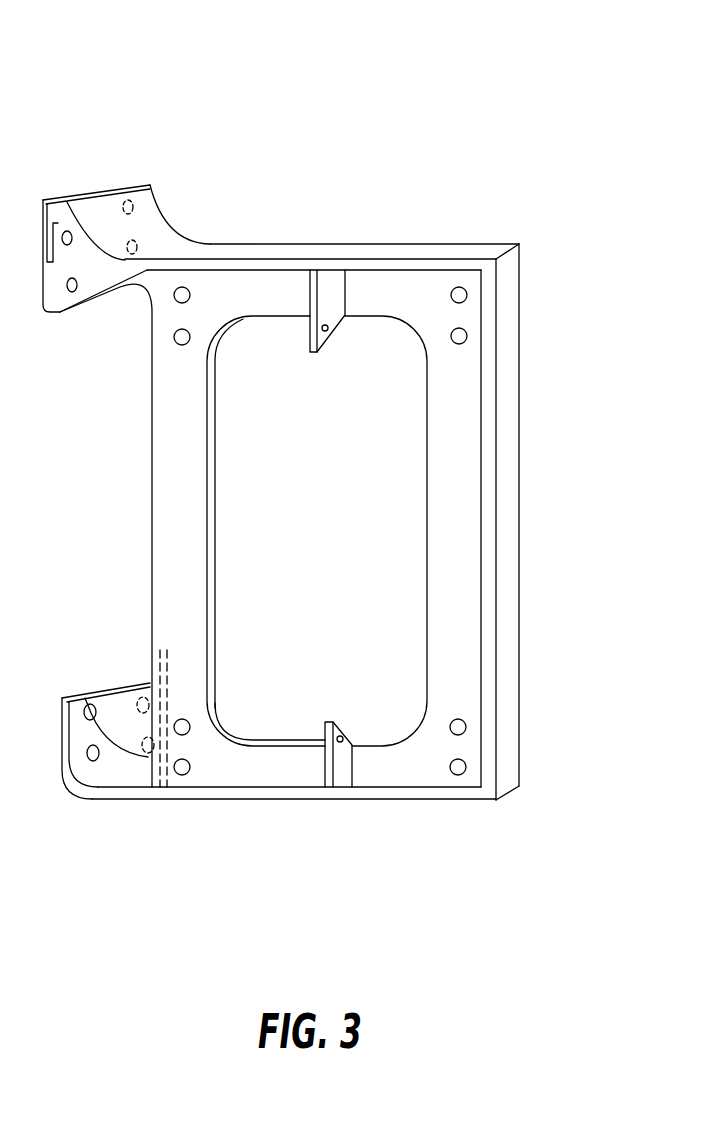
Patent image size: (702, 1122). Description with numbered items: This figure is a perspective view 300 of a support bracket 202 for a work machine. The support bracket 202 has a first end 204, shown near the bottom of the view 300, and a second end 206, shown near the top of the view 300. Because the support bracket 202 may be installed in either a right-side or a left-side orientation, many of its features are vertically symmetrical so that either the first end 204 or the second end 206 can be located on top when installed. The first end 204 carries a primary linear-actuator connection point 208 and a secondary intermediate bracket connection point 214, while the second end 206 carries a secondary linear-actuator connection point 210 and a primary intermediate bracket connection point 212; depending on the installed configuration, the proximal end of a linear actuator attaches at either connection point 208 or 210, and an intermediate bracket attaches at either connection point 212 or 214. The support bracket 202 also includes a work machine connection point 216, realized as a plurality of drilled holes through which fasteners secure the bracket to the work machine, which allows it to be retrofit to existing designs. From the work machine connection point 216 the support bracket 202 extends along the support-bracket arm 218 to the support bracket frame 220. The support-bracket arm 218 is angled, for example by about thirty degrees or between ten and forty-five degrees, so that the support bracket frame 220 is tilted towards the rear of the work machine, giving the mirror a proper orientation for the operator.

The view 300 is at (367, 95).
The support bracket 202 is at (152, 472).
The first end 204 is at (542, 731).
The second end 206 is at (540, 298).
The support bracket frame 220 is at (487, 255).
The primary linear-actuator connection point 208 is at (337, 722).
The secondary linear-actuator connection point 210 is at (322, 358).
The primary intermediate bracket connection point 212 is at (186, 333).
The secondary intermediate bracket connection point 214 is at (188, 732).
The work machine connection point 216 is at (92, 193).
The support-bracket arm 218 is at (158, 228).